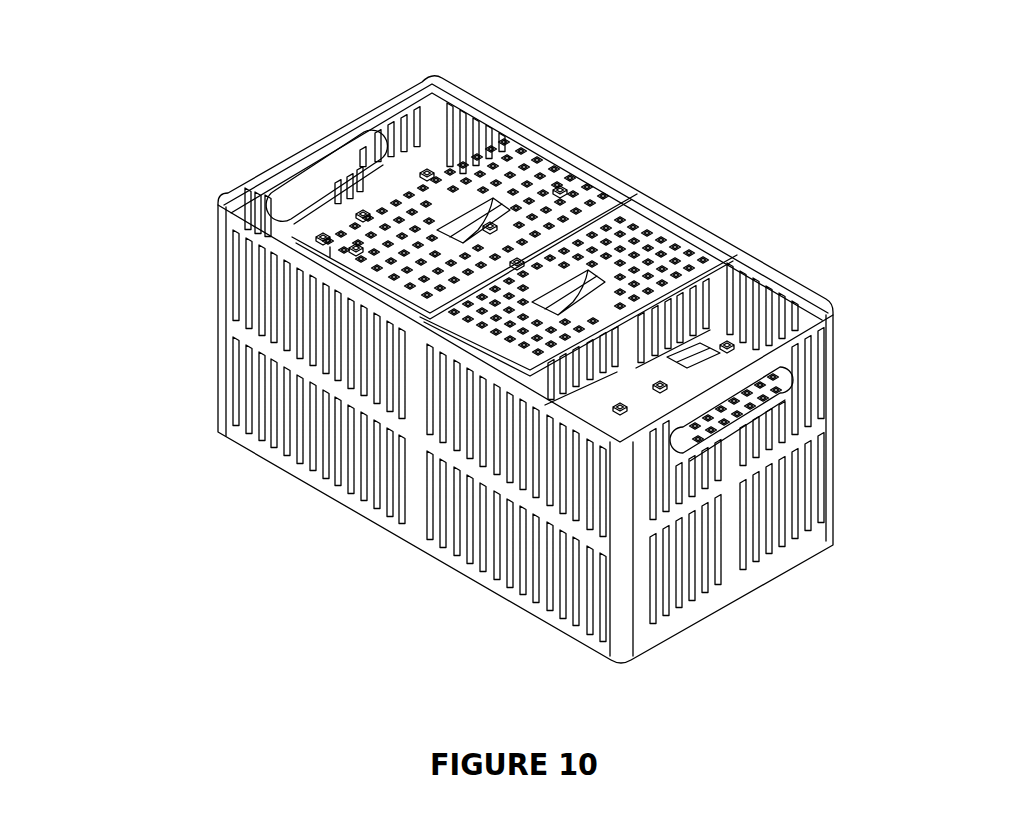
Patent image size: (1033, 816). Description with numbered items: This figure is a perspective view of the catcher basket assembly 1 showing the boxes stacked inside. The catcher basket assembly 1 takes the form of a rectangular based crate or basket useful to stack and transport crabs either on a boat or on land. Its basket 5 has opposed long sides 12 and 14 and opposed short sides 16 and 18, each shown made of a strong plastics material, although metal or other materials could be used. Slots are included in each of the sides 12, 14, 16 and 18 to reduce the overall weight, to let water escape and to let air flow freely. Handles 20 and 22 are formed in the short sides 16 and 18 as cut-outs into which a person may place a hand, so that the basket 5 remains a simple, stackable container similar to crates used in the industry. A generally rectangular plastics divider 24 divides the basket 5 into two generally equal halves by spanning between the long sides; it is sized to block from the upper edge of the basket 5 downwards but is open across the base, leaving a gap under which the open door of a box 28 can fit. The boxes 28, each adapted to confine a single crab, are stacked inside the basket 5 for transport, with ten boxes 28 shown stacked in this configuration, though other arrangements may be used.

The catcher basket assembly 1 is at (187, 213).
The basket 5 is at (428, 91).
The long side 12 is at (227, 383).
The long side 14 is at (660, 212).
The short side 16 is at (340, 127).
The short side 18 is at (803, 440).
The handle 20 is at (307, 177).
The handle 22 is at (825, 312).
The divider 24 is at (583, 215).
The box 28 is at (420, 175).